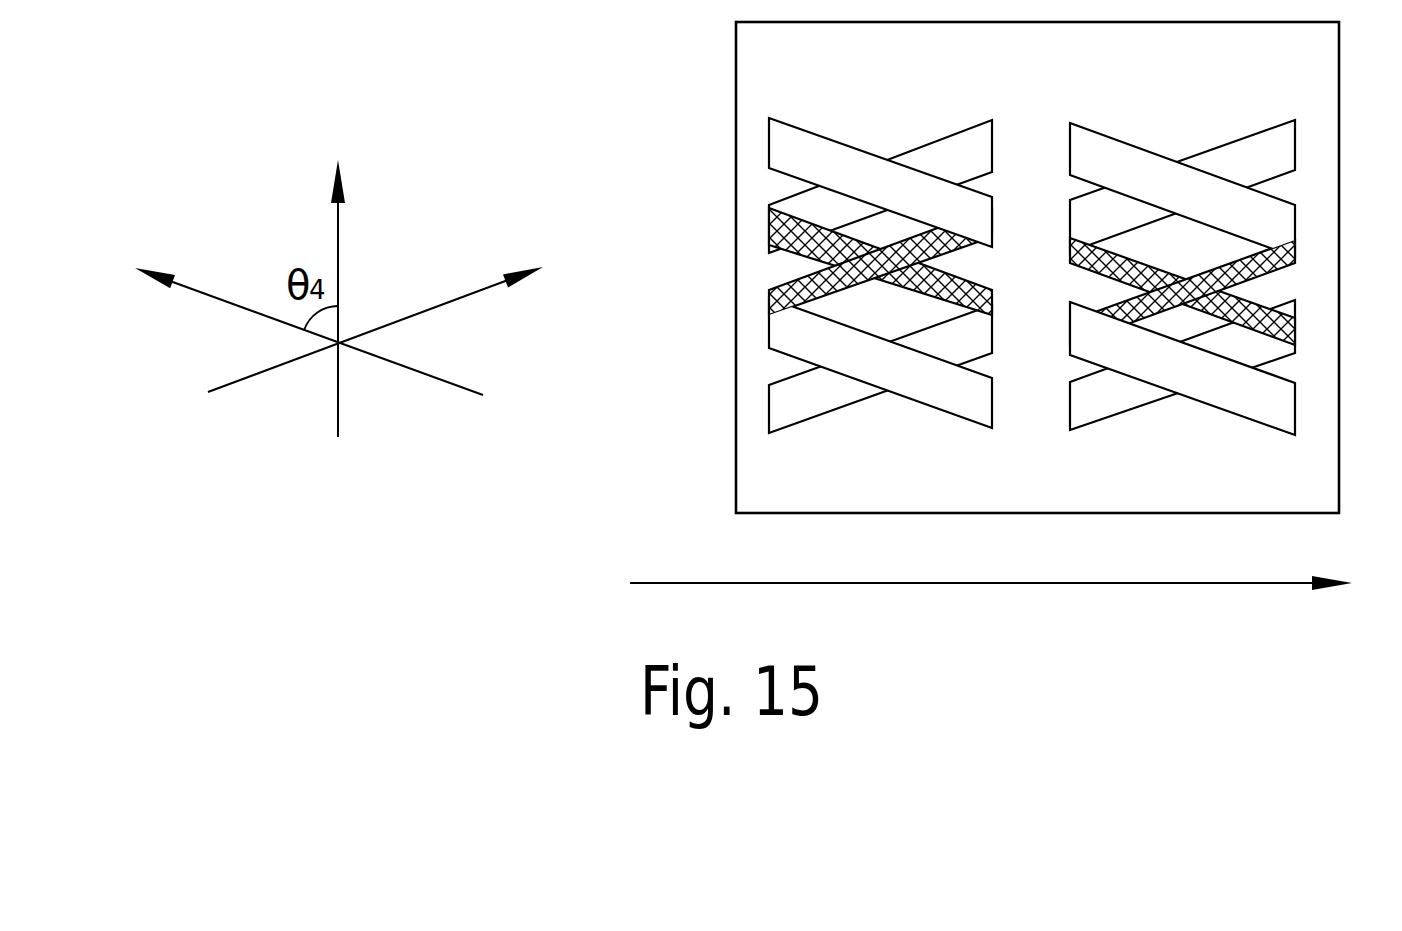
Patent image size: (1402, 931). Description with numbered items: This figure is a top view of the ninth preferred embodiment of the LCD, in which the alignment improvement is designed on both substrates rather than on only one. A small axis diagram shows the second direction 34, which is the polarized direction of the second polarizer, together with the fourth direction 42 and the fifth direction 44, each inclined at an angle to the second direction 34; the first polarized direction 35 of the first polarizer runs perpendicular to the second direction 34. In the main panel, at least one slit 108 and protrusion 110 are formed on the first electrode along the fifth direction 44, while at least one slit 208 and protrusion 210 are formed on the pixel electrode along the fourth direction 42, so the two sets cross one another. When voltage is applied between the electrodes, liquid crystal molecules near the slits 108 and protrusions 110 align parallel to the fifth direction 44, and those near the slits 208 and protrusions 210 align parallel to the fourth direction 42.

The second direction 34 is at (338, 270).
The fourth direction 42 is at (400, 313).
The fifth direction 44 is at (284, 316).
The first polarized direction 35 is at (1015, 579).
The slit 108 is at (782, 140).
The slit 208 is at (793, 207).
The protrusion 110 is at (808, 258).
The protrusion 210 is at (783, 293).